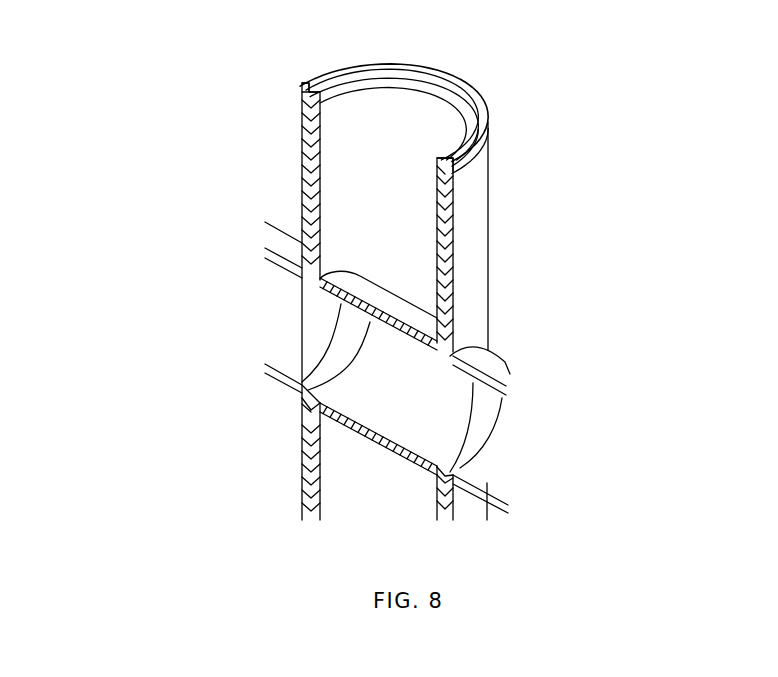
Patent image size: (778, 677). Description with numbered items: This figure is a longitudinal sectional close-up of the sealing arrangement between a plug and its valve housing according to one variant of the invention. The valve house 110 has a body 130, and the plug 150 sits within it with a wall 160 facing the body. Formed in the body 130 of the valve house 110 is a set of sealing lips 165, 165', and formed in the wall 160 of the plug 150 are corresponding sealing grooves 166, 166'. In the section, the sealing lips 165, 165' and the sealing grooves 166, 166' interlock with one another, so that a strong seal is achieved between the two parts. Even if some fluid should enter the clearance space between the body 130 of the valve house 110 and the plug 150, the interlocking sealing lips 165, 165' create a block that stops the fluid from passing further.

The valve house 110 is at (498, 377).
The body 130 is at (307, 180).
The plug 150 is at (405, 143).
The wall 160 is at (307, 273).
The sealing lip 165 is at (515, 213).
The sealing lip 165' is at (230, 424).
The sealing groove 166 is at (267, 84).
The sealing groove 166' is at (503, 469).